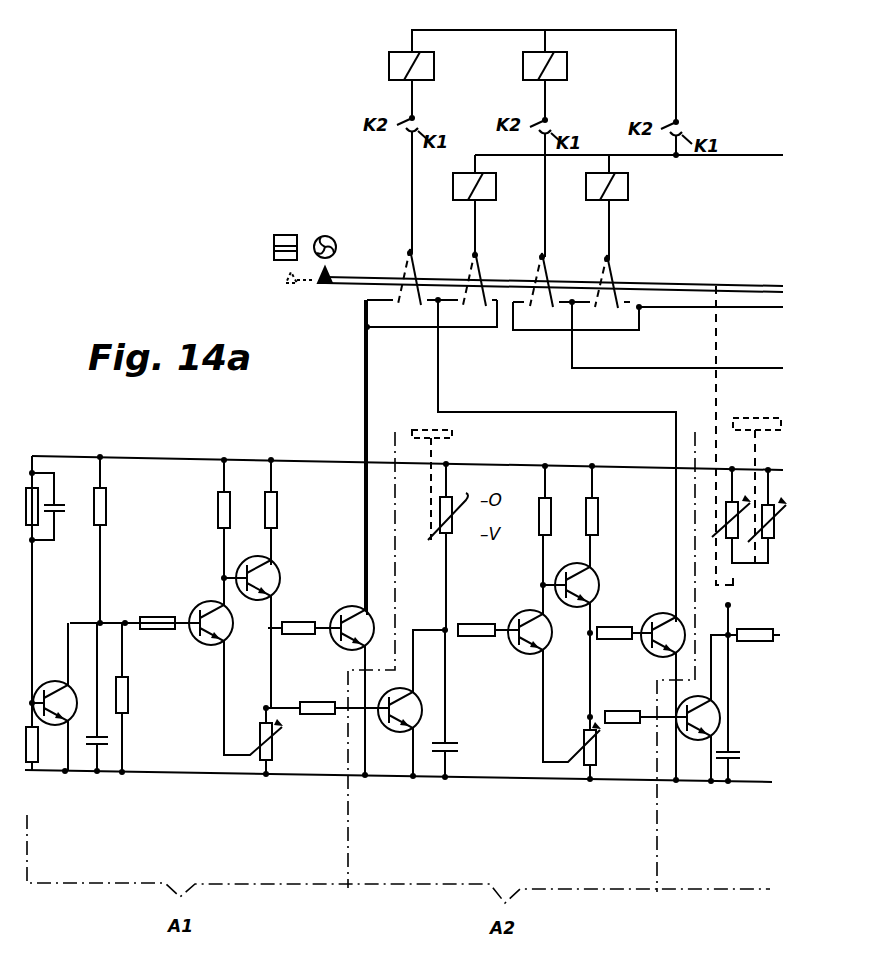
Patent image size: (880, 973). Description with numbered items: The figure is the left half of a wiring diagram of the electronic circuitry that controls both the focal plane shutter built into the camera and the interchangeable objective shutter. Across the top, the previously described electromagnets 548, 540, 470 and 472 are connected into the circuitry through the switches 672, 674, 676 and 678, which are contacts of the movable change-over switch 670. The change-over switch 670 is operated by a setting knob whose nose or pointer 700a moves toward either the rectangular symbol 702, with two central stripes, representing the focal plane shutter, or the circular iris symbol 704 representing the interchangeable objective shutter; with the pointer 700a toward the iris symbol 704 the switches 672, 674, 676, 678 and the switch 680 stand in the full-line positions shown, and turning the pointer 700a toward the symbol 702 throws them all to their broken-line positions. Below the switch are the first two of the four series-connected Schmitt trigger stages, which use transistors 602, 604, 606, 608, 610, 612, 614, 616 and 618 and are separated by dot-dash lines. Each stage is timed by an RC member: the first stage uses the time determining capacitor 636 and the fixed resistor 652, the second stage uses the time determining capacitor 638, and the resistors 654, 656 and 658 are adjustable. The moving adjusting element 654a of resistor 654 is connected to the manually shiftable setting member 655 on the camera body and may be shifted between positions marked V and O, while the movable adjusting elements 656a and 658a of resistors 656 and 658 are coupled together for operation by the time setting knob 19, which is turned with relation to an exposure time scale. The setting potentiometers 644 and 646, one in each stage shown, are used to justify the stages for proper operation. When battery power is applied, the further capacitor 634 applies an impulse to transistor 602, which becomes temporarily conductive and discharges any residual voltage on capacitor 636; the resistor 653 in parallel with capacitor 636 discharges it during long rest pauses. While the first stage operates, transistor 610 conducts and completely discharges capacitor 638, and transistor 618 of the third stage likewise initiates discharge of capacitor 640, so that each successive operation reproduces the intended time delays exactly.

The electromagnet 548 is at (388, 66).
The electromagnet 540 is at (567, 67).
The electromagnet 470 is at (456, 196).
The electromagnet 472 is at (589, 196).
The change-over switch 670 is at (768, 262).
The switch 672 is at (413, 272).
The switch 674 is at (478, 274).
The switch 676 is at (548, 276).
The switch 678 is at (613, 277).
The focal plane shutter symbol 702 is at (282, 234).
The iris symbol 704 is at (330, 236).
The pointer 700a is at (325, 285).
The time setting knob 19 is at (748, 418).
The setting member 655 is at (453, 436).
The capacitor 634 is at (60, 504).
The fixed resistor 652 is at (106, 500).
The time determining capacitor 636 is at (86, 698).
The resistor 653 is at (128, 703).
The transistor 602 is at (51, 681).
The transistor 604 is at (196, 605).
The transistor 606 is at (275, 566).
The setting potentiometer 644 is at (275, 754).
The transistor 608 is at (346, 606).
The transistor 610 is at (387, 738).
The time determining capacitor 638 is at (452, 745).
The variable resistor 654 is at (454, 535).
The moving adjusting element 654a is at (437, 530).
The transistor 612 is at (518, 653).
The transistor 614 is at (598, 588).
The setting potentiometer 646 is at (597, 760).
The transistor 616 is at (645, 660).
The transistor 618 is at (690, 751).
The capacitor 640 is at (736, 751).
The switch 680 is at (750, 563).
The variable resistor 656 is at (738, 541).
The movable adjusting element 656a is at (722, 530).
The variable resistor 658 is at (751, 580).
The movable adjusting element 658a is at (769, 477).